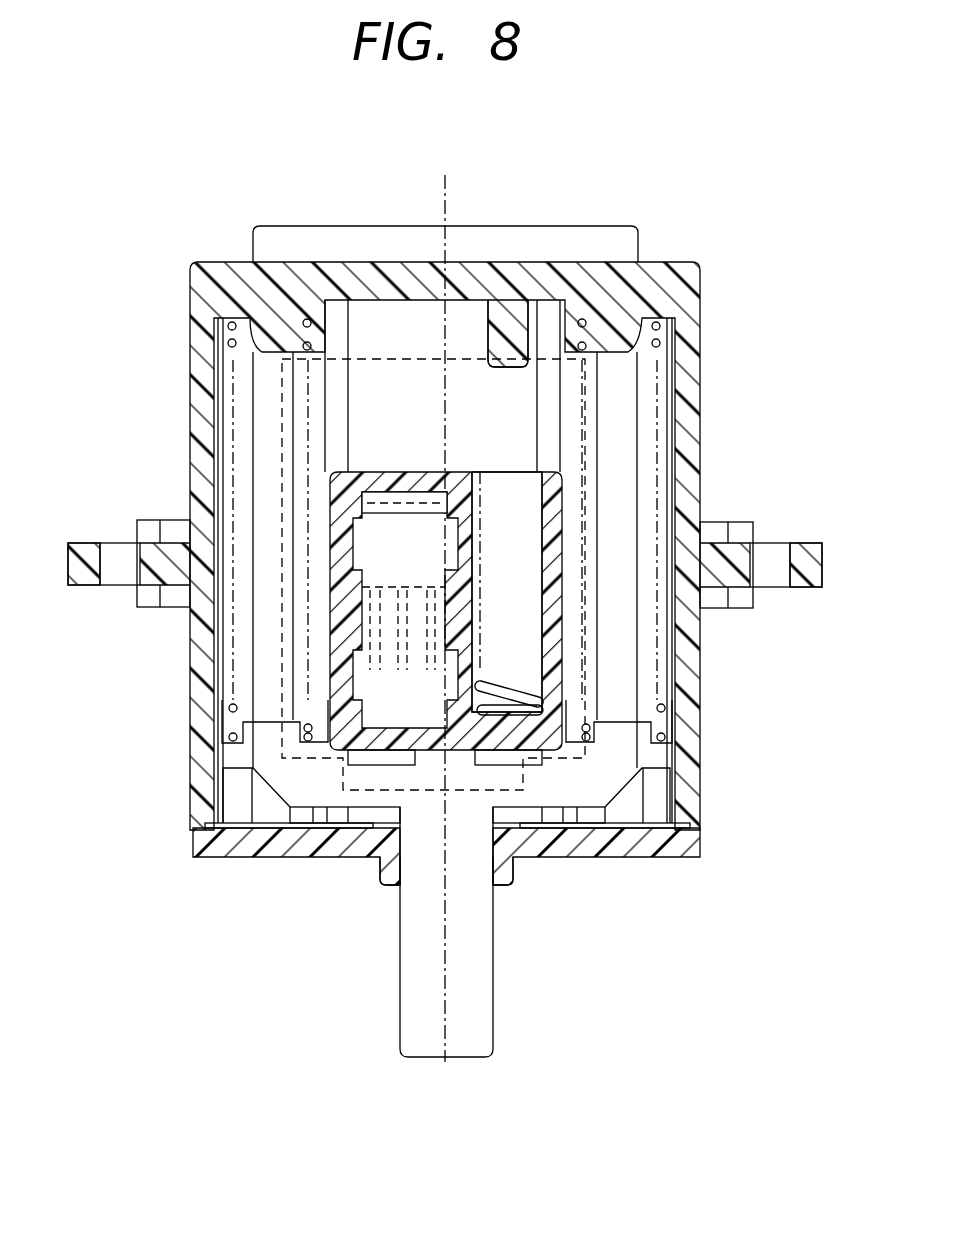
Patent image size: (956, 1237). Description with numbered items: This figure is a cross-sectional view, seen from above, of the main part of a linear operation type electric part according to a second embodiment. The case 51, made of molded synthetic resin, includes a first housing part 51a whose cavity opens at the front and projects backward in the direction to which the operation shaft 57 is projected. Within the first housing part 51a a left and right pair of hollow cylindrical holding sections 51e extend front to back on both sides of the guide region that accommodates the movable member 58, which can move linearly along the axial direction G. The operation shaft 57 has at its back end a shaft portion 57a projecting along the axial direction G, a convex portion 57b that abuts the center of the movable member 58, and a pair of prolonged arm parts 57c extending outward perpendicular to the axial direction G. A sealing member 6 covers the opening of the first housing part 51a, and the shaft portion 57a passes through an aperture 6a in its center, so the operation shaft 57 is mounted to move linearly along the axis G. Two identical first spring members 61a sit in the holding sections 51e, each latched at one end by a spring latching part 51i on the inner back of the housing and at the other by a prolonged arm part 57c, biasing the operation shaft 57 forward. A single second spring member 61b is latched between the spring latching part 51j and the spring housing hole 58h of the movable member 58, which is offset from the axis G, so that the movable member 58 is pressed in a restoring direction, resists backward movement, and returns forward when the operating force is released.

The case 51 is at (706, 308).
The first housing part 51a is at (362, 340).
The holding sections 51e is at (267, 510).
The spring latching parts 51i is at (263, 340).
The spring latching part 51j is at (508, 300).
The first spring members 61a is at (229, 333).
The second spring member 61b is at (505, 337).
The movable member 58 is at (509, 742).
The spring housing hole 58h is at (510, 632).
The operation shaft 57 is at (463, 914).
The shaft portion 57a is at (420, 988).
The convex portion 57b is at (372, 870).
The prolonged arm parts 57c is at (285, 780).
The sealing member 6 is at (400, 871).
The aperture 6a is at (478, 883).
The axial direction G is at (444, 198).